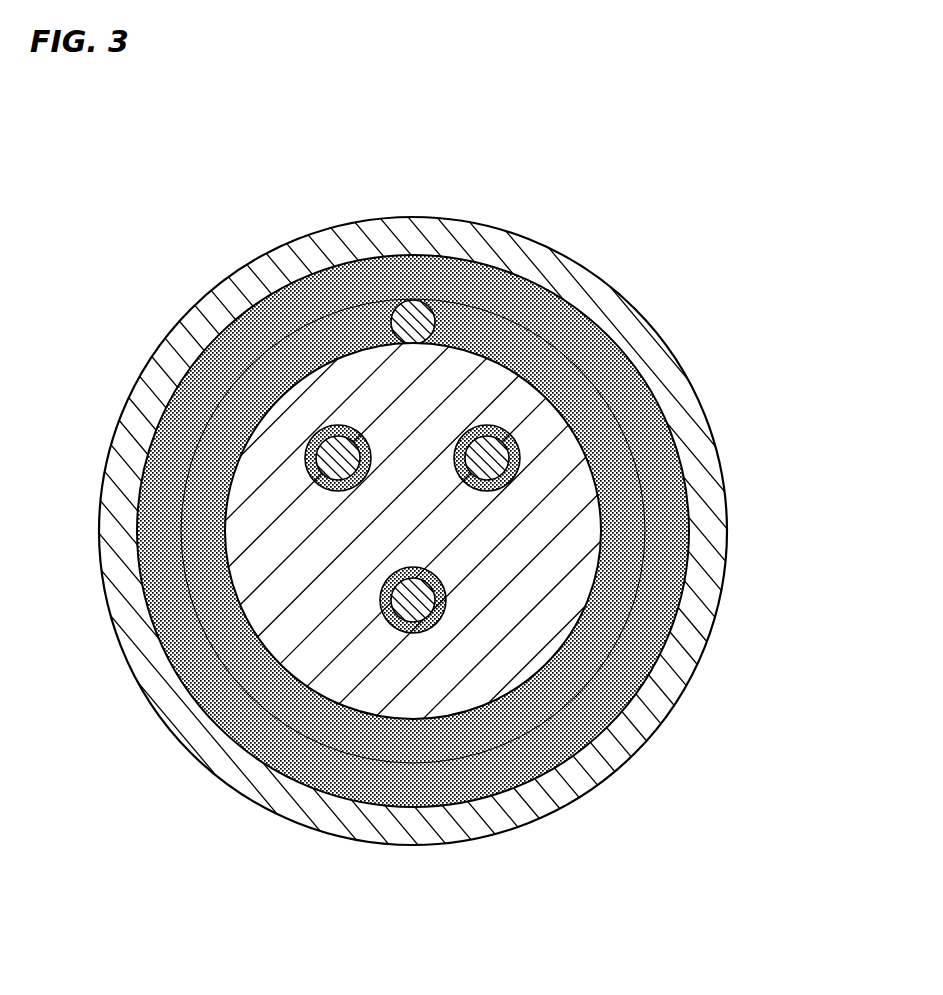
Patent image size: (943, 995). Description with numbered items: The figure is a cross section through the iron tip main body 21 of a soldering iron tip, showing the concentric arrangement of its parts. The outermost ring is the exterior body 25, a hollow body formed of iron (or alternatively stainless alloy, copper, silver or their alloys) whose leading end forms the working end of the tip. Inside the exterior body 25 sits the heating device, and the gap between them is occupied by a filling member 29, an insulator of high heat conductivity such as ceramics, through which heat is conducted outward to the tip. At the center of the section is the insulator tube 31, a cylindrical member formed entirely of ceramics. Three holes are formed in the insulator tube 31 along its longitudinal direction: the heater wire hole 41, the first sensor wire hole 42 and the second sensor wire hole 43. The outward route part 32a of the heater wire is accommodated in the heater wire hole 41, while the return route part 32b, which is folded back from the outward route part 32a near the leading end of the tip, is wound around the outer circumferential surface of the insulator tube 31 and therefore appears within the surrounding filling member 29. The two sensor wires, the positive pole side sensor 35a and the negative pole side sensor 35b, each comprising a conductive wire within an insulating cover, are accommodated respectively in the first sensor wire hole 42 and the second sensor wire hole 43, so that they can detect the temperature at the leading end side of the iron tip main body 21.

The iron tip main body 21 is at (560, 238).
The exterior body 25 is at (722, 598).
The filling member 29 is at (336, 426).
The insulator tube 31 is at (333, 684).
The outward route part 32a is at (400, 612).
The return route part 32b is at (405, 303).
The positive pole side sensor 35a is at (323, 452).
The negative pole side sensor 35b is at (500, 466).
The heater wire hole 41 is at (433, 622).
The first sensor wire hole 42 is at (315, 481).
The second sensor wire hole 43 is at (478, 490).